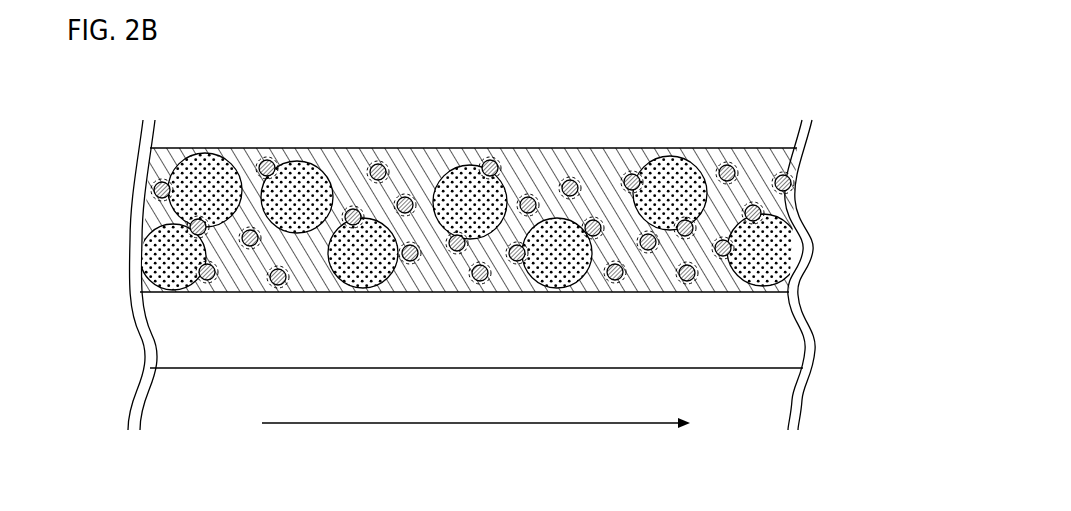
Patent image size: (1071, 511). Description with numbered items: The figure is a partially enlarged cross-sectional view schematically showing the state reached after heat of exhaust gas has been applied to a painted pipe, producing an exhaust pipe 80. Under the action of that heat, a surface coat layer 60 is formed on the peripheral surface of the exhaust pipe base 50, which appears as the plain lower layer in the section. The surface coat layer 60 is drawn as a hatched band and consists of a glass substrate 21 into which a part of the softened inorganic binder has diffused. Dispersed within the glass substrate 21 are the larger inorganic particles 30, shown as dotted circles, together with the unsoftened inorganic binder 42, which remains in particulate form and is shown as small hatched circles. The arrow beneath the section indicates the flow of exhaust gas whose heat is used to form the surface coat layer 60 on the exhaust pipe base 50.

The exhaust pipe 80 is at (755, 89).
The surface coat layer 60 is at (460, 177).
The glass substrate 21 is at (583, 147).
The inorganic particles 30 is at (469, 221).
The unsoftened inorganic binder 42 is at (263, 158).
The exhaust pipe base 50 is at (748, 352).